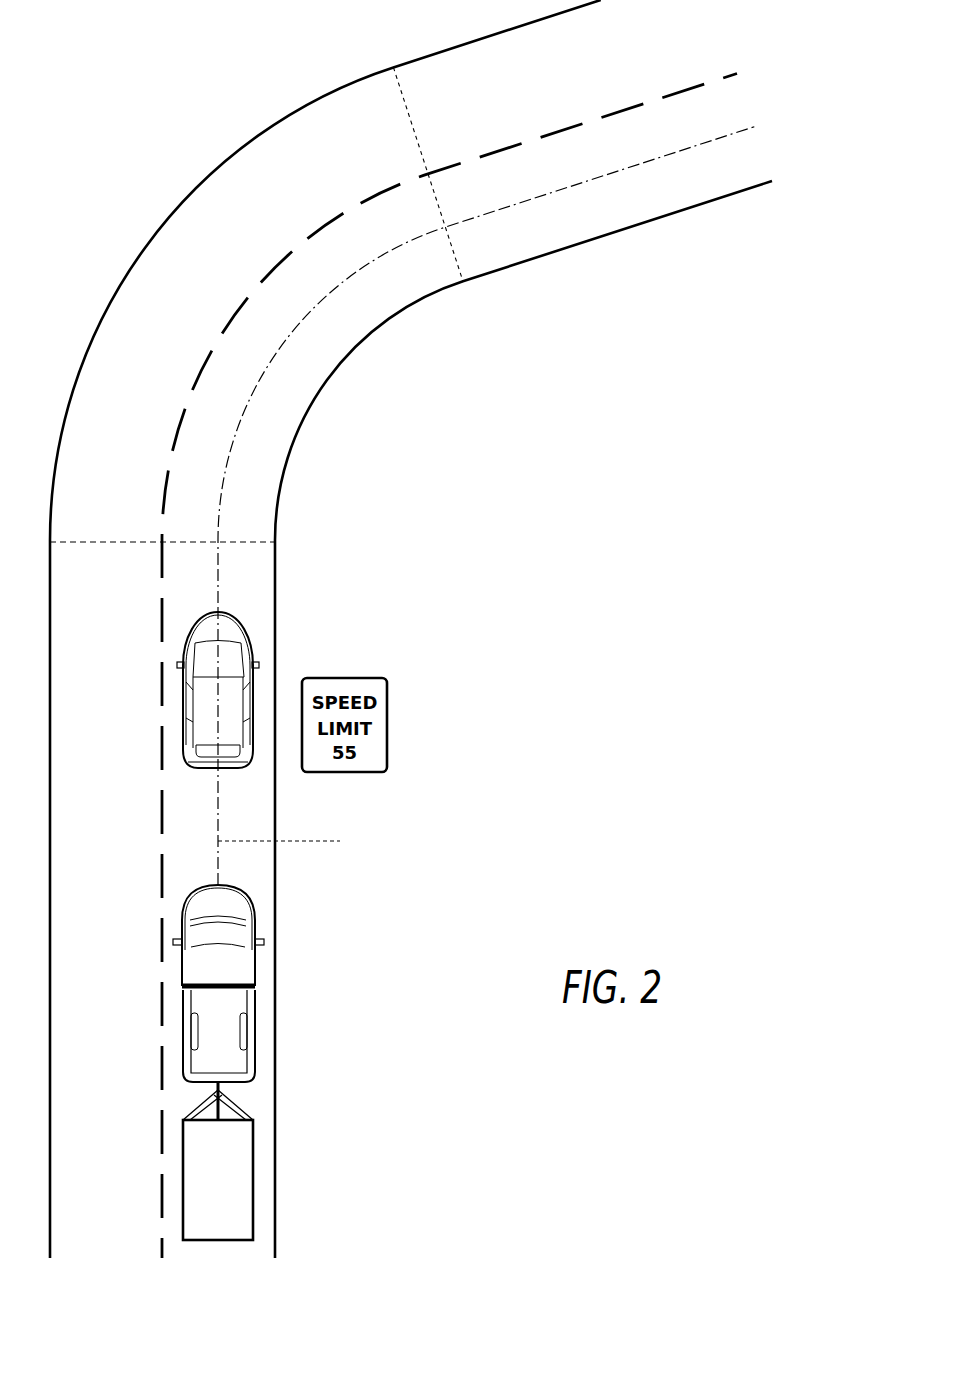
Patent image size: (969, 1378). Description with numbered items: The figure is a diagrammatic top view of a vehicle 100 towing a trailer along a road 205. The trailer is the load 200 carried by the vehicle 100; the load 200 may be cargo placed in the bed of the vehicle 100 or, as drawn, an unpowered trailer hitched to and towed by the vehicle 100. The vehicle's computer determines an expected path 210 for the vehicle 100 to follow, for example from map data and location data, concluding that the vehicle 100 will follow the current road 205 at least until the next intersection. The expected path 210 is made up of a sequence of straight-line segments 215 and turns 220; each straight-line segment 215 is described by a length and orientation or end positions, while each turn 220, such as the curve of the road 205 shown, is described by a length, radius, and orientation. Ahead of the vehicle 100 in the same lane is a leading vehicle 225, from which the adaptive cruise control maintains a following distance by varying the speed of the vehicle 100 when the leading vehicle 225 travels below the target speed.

The vehicle 100 is at (257, 973).
The load 200 is at (255, 1157).
The road 205 is at (277, 907).
The expected path 210 is at (300, 844).
The straight-line segment 215 is at (220, 841).
The turn 220 is at (277, 357).
The leading vehicle 225 is at (253, 648).